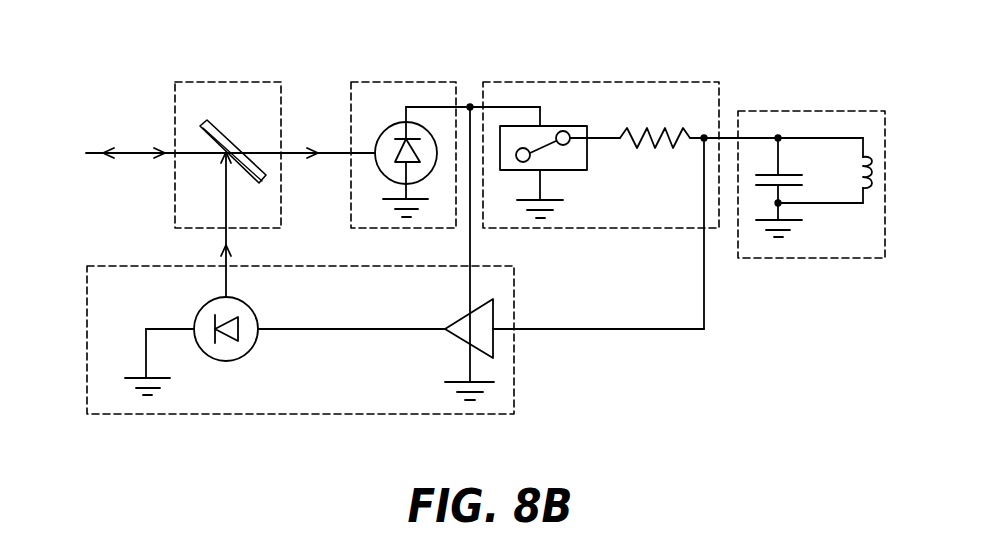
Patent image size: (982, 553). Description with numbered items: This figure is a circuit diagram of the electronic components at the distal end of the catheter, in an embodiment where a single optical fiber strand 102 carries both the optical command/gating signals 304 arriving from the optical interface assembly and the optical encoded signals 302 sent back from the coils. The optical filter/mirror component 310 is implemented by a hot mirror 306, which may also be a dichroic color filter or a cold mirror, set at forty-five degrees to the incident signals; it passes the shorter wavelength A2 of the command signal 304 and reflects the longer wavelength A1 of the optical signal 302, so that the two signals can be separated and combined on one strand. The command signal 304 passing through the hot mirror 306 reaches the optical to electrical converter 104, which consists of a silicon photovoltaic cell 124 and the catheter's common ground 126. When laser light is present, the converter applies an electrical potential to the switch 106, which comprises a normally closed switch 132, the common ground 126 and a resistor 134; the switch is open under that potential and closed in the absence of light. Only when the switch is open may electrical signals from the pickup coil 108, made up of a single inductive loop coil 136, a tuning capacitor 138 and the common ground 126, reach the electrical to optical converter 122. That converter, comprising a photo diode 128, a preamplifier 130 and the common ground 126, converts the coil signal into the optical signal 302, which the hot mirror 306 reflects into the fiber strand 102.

The optical fiber strand 102 is at (98, 156).
The optical signal 302 is at (108, 148).
The optical command/gating signals 304 is at (160, 148).
The hot mirror 306 is at (257, 180).
The optical filter/mirror component 310 is at (225, 80).
The optical to electrical converter 104 is at (400, 80).
The silicon photovoltaic cell 124 is at (383, 130).
The common ground 126 is at (395, 210).
The switch 106 is at (522, 80).
The normally closed switch 132 is at (550, 125).
The resistor 134 is at (662, 130).
The pickup coil 108 is at (858, 109).
The single inductive loop coil 136 is at (857, 172).
The tuning capacitor 138 is at (790, 173).
The electrical to optical converter 122 is at (322, 418).
The photo diode 128 is at (252, 347).
The preamplifier 130 is at (493, 345).